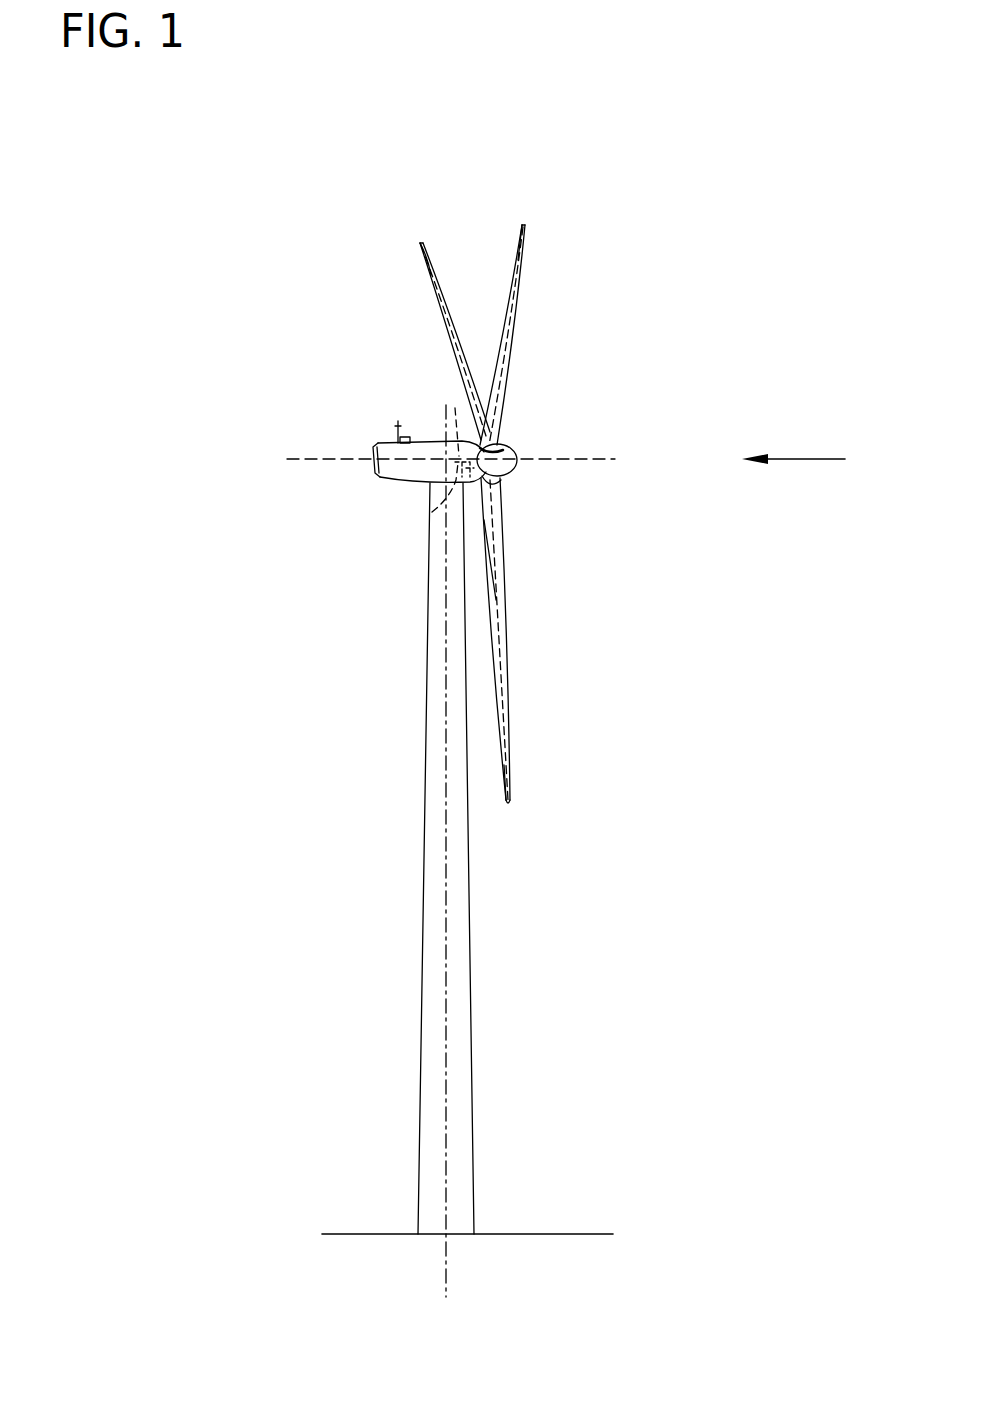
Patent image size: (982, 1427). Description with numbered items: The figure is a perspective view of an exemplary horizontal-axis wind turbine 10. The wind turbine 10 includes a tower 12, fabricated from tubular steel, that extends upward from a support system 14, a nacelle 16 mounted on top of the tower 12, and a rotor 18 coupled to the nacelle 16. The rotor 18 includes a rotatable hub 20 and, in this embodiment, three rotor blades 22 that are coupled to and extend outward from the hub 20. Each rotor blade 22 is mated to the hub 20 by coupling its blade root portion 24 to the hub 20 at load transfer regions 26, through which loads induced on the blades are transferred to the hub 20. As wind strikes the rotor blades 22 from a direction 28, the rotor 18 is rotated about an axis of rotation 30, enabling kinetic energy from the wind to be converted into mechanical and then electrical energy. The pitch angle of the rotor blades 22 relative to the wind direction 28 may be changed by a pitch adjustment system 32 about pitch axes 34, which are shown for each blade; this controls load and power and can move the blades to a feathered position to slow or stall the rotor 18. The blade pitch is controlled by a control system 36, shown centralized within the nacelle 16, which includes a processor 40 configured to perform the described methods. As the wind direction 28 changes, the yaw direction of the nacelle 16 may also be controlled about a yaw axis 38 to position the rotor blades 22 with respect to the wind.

The wind turbine 10 is at (208, 245).
The tower 12 is at (418, 1004).
The support system 14 is at (377, 1233).
The nacelle 16 is at (405, 481).
The rotor 18 is at (530, 364).
The rotatable hub 20 is at (512, 450).
The rotor blade 22 is at (441, 310).
The blade root portion 24 is at (503, 564).
The load transfer regions 26 is at (488, 481).
The direction 28 is at (815, 459).
The axis of rotation 30 is at (581, 462).
The pitch adjustment system 32 is at (475, 494).
The pitch axes 34 is at (418, 246).
The control system 36 is at (432, 512).
The yaw axis 38 is at (447, 892).
The processor 40 is at (455, 408).